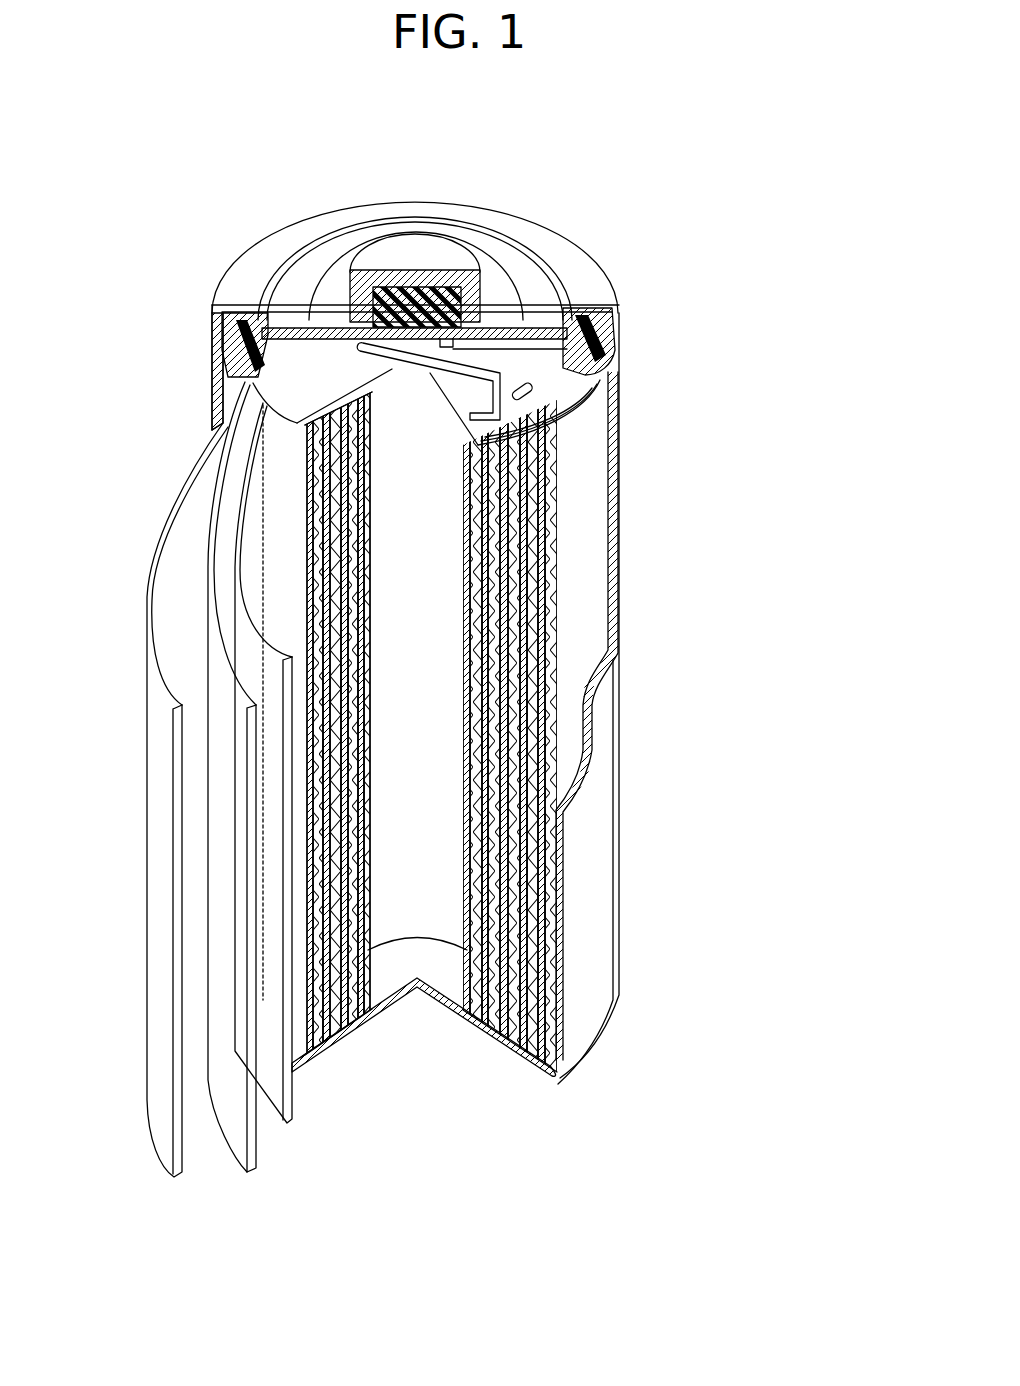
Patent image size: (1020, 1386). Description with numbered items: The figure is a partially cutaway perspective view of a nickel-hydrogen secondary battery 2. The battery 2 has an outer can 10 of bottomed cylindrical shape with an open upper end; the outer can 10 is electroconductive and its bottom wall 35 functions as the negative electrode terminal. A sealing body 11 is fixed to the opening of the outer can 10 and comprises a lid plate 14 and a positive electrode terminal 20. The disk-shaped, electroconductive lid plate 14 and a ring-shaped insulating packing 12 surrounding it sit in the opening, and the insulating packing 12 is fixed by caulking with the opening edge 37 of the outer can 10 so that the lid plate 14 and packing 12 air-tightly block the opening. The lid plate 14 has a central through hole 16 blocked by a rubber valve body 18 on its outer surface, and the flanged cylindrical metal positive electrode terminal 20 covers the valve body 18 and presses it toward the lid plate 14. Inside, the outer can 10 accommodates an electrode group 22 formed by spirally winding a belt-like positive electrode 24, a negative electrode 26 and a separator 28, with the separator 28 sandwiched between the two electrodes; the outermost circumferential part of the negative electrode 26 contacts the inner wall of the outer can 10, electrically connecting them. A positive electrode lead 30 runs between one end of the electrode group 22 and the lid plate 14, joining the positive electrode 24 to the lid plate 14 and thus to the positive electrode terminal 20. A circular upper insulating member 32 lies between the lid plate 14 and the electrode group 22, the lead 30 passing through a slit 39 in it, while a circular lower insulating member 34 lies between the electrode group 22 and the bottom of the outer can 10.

The battery 2 is at (620, 197).
The outer can 10 is at (618, 672).
The sealing body 11 is at (534, 290).
The insulating packing 12 is at (221, 338).
The lid plate 14 is at (295, 310).
The central through hole 16 is at (615, 332).
The valve body 18 is at (392, 297).
The positive electrode terminal 20 is at (437, 247).
The electrode group 22 is at (600, 567).
The positive electrode 24 is at (299, 1113).
The negative electrode 26 is at (181, 1166).
The separator 28 is at (263, 1175).
The positive electrode lead 30 is at (503, 383).
The upper insulating member 32 is at (540, 407).
The lower insulating member 34 is at (437, 972).
The bottom wall 35 is at (350, 1036).
The opening edge 37 is at (588, 279).
The slit 39 is at (516, 403).